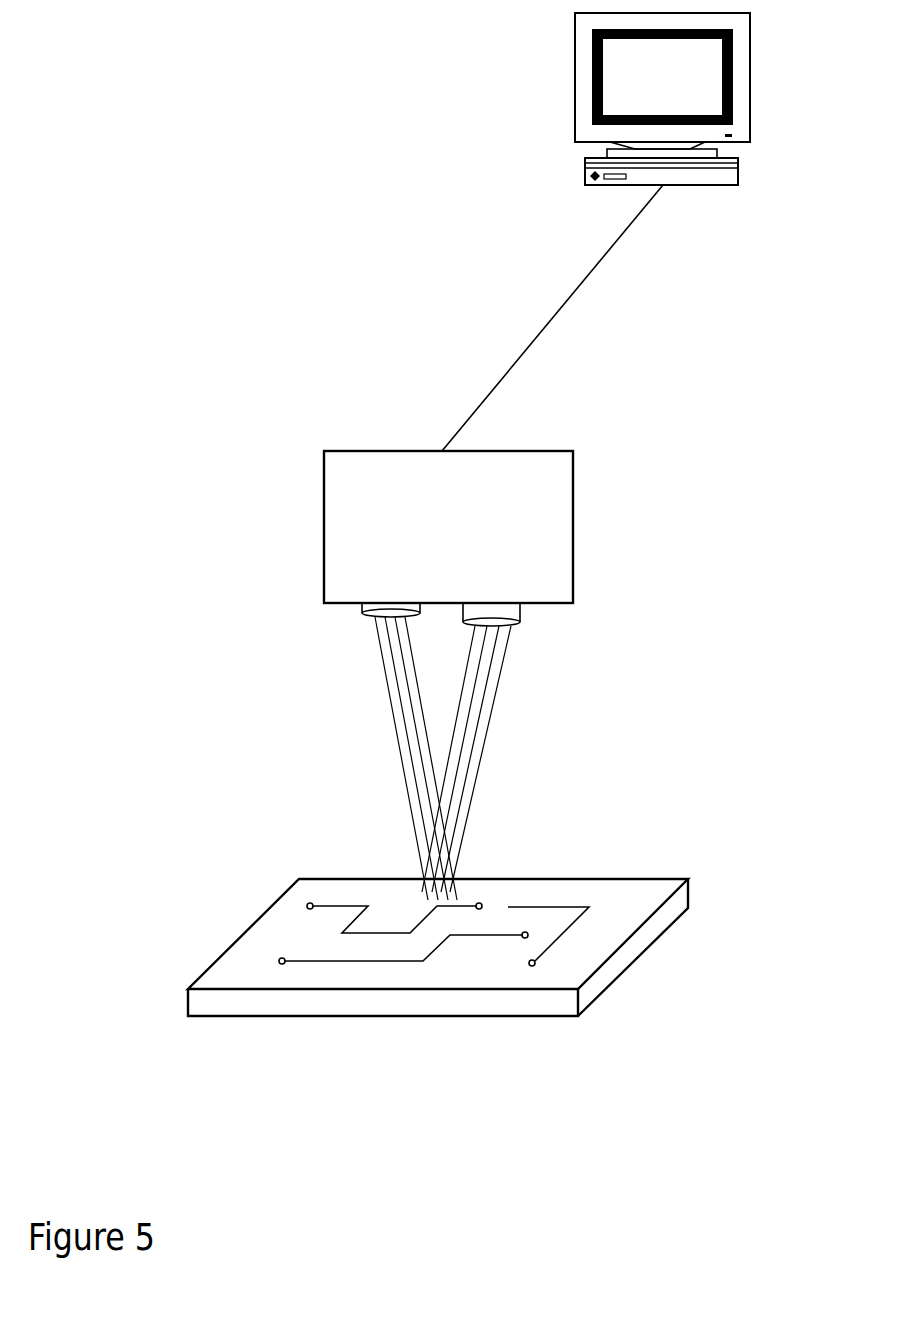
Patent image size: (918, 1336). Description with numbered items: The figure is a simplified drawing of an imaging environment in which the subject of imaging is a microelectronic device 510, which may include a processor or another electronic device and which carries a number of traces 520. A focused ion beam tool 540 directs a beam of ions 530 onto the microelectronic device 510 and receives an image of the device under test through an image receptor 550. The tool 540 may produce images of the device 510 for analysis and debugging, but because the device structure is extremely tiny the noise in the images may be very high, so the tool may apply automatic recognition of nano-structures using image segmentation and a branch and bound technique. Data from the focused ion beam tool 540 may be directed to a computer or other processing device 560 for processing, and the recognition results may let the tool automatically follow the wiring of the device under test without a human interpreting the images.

The microelectronic device 510 is at (238, 929).
The traces 520 is at (560, 897).
The beam of ions 530 is at (432, 758).
The focused ion beam tool 540 is at (448, 527).
The image receptor 550 is at (528, 622).
The computer or other processing device 560 is at (605, 232).